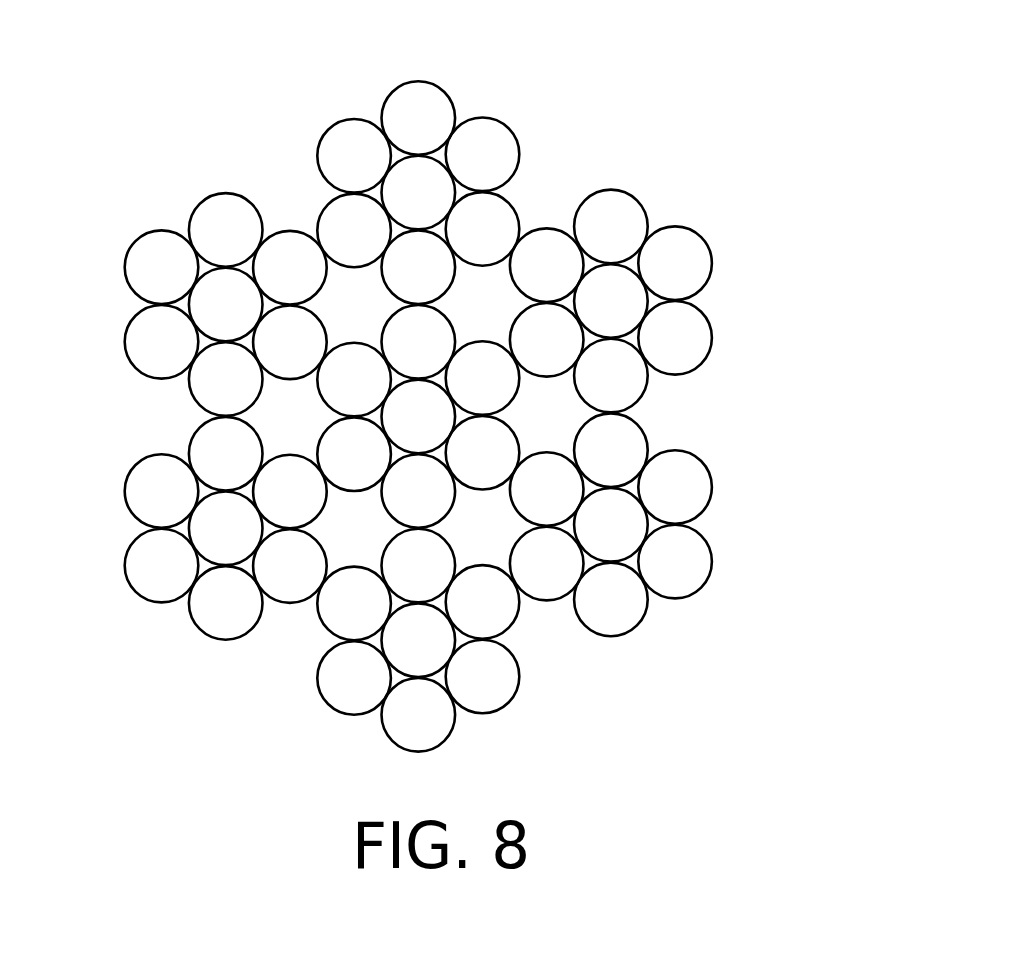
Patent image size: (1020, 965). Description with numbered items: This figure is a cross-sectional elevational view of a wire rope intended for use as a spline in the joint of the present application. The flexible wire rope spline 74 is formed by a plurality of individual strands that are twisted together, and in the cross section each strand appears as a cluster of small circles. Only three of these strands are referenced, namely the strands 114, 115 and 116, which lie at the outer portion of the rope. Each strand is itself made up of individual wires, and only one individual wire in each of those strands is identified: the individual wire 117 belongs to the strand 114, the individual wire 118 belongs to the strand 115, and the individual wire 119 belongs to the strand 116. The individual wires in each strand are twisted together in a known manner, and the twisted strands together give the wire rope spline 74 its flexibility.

The flexible wire rope spline 74 is at (498, 115).
The strand 114 is at (710, 240).
The strand 115 is at (712, 457).
The strand 116 is at (523, 680).
The individual wire 117 is at (710, 322).
The individual wire 118 is at (713, 555).
The individual wire 119 is at (452, 735).